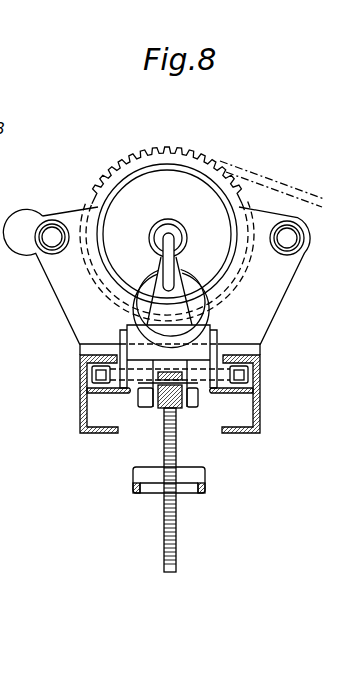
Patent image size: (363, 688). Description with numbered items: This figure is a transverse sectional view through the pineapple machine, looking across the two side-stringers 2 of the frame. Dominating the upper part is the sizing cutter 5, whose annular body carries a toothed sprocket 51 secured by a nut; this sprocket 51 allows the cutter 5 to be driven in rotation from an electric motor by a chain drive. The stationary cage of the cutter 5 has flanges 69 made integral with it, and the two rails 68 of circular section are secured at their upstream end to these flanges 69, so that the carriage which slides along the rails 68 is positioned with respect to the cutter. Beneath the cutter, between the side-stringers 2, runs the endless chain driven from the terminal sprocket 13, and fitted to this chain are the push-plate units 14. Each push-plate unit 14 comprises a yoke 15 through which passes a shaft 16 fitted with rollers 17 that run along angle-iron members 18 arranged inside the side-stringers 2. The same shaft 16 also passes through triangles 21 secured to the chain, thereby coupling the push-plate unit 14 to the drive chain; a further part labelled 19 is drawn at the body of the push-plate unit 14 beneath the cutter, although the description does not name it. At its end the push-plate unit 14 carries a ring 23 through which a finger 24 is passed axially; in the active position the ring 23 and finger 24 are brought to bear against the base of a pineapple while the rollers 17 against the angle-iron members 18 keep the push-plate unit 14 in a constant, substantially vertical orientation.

The side-stringer 2 is at (78, 400).
The sizing cutter 5 is at (181, 203).
The terminal sprocket 13 is at (166, 531).
The push-plate unit 14 is at (170, 293).
The yoke 15 is at (238, 353).
The shaft 16 is at (197, 400).
The roller 17 is at (80, 368).
The angle-iron member 18 is at (122, 392).
The slide block 19 is at (178, 384).
The triangle 21 is at (187, 414).
The ring 23 is at (178, 248).
The finger 24 is at (170, 238).
The sprocket 51 is at (153, 148).
The rail 68 is at (296, 232).
The flange 69 is at (281, 283).